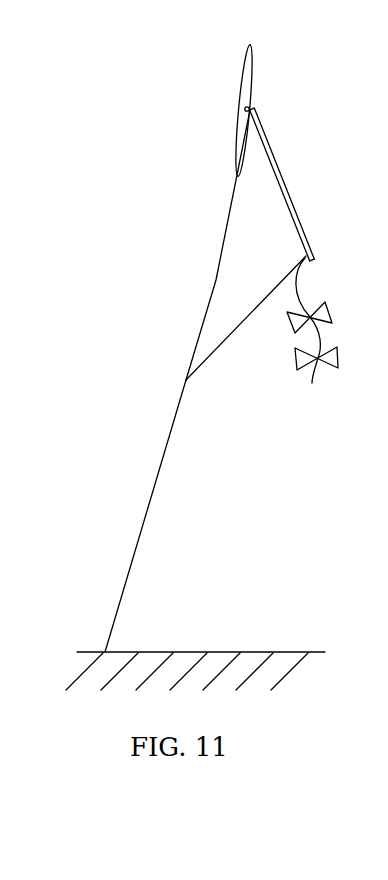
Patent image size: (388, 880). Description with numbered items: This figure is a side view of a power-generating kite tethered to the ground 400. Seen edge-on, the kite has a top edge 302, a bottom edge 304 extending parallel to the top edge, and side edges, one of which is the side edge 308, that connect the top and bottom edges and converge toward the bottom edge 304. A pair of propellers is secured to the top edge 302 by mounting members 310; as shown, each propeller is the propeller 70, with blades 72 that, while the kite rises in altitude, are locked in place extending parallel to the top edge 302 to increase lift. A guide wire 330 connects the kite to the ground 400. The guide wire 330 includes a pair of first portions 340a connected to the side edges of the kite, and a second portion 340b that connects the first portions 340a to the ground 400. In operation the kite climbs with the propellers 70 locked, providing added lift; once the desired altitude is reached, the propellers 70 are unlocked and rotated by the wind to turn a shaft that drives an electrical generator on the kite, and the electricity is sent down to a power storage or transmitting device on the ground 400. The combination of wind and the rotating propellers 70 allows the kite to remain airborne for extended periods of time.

The propeller 70 is at (260, 167).
The blades 72 is at (245, 63).
The mounting members 310 is at (240, 110).
The top edge 302 is at (252, 108).
The side edge 308 is at (307, 183).
The bottom edge 304 is at (312, 261).
The guide wire 330 is at (199, 381).
The first portions 340a is at (204, 320).
The second portion 340b is at (155, 485).
The ground 400 is at (260, 655).